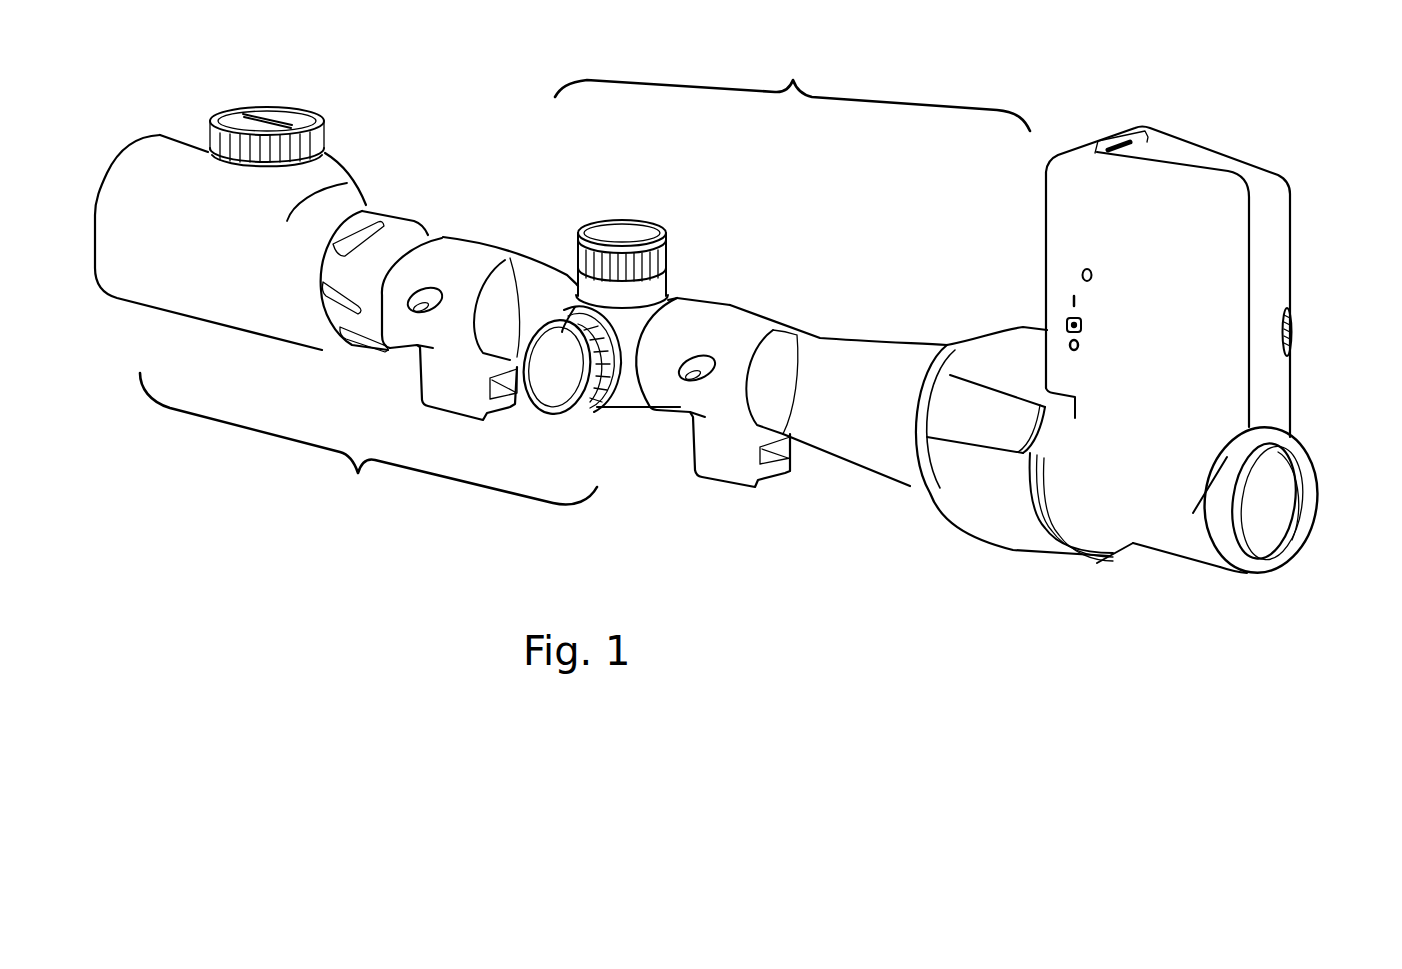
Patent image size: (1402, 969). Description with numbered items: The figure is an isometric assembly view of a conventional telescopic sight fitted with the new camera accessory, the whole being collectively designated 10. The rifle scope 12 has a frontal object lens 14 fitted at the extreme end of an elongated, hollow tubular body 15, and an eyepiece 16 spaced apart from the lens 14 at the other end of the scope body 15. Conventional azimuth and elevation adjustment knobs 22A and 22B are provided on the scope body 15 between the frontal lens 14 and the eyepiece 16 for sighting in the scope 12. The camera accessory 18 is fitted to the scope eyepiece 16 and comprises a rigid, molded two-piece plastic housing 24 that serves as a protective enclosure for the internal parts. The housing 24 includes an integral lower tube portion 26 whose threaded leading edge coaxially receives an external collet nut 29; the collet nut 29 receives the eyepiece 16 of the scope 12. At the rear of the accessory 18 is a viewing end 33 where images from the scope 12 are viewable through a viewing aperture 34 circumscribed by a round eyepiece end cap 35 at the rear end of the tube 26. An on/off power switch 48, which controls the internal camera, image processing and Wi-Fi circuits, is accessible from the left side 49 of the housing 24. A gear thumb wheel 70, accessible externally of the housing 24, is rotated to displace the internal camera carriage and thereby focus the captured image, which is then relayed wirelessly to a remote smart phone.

The telescopic sight fitted with camera accessory 10 is at (792, 91).
The rifle scope 12 is at (368, 441).
The frontal object lens 14 is at (140, 282).
The tubular body 15 is at (702, 296).
The eyepiece 16 is at (888, 489).
The camera accessory 18 is at (1017, 243).
The azimuth adjustment knob 22A is at (612, 228).
The elevation adjustment knob 22B is at (556, 380).
The housing 24 is at (1150, 480).
The lower tube portion 26 is at (1070, 523).
The collet nut 29 is at (980, 490).
The viewing end 33 is at (1227, 567).
The viewing aperture 34 is at (1265, 518).
The eyepiece end cap 35 is at (1313, 460).
The on/off power switch 48 is at (1082, 320).
The left side of the housing 49 is at (1138, 247).
The gear thumb wheel 70 is at (1293, 330).